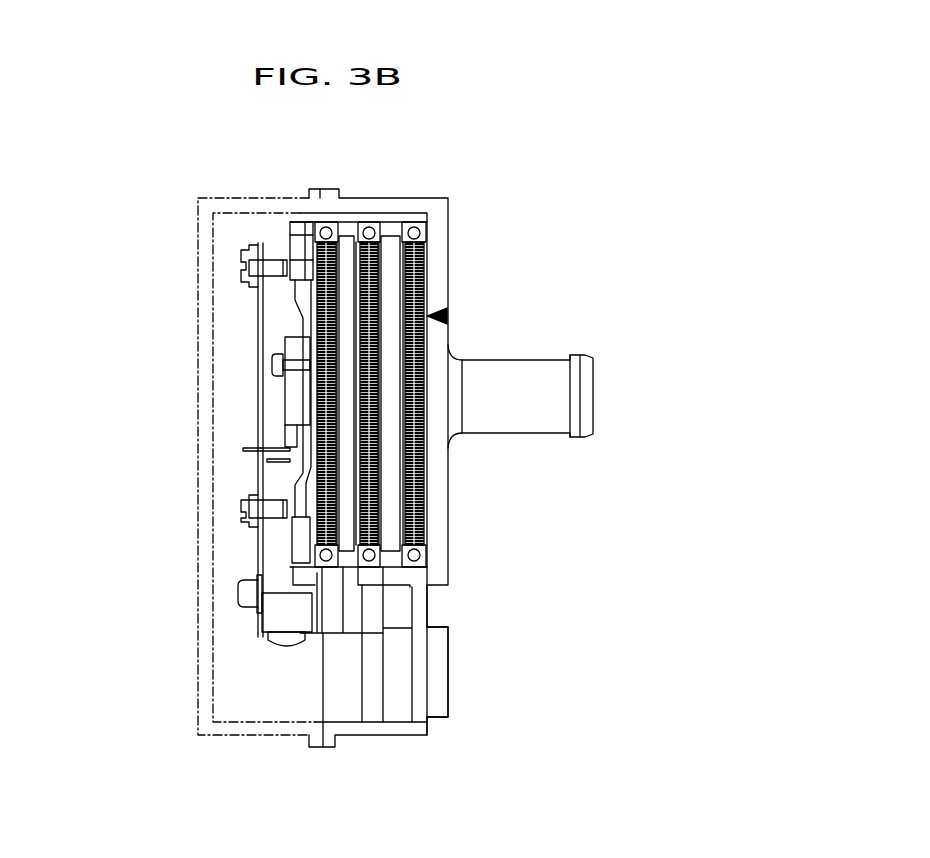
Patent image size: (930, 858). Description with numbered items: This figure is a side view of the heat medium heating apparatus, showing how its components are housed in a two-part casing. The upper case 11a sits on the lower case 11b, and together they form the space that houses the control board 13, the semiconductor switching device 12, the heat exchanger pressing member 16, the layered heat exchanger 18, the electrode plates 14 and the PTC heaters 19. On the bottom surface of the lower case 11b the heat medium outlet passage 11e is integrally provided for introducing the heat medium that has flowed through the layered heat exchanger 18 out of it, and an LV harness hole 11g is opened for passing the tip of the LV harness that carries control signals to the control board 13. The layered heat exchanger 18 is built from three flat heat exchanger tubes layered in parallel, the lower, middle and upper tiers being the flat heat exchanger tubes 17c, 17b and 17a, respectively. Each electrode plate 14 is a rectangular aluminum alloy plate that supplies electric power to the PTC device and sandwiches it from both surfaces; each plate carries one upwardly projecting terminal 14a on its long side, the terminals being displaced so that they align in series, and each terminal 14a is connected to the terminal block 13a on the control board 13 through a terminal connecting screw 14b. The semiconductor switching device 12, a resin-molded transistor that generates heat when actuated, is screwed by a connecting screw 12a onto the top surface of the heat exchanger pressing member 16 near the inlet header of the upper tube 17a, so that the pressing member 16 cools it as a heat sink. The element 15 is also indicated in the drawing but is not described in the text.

The upper case 11a is at (220, 199).
The lower case 11b is at (447, 208).
The heat medium outlet passage 11e is at (594, 388).
The LV harness hole 11g is at (448, 665).
The semiconductor switching device 12 is at (290, 405).
The connecting screw 12a is at (273, 362).
The control board 13 is at (258, 302).
The terminal block 13a is at (280, 618).
The electrode plate 14 is at (354, 242).
The terminal 14a is at (320, 633).
The terminal connecting screw 14b is at (278, 645).
The connector 15 is at (268, 228).
The heat exchanger pressing member 16 is at (298, 488).
The upper tier flat heat exchanger tube 17a is at (325, 323).
The middle tier flat heat exchanger tube 17b is at (368, 502).
The lower tier flat heat exchanger tube 17c is at (415, 257).
The layered heat exchanger 18 is at (447, 316).
The PTC heater 19 is at (390, 548).